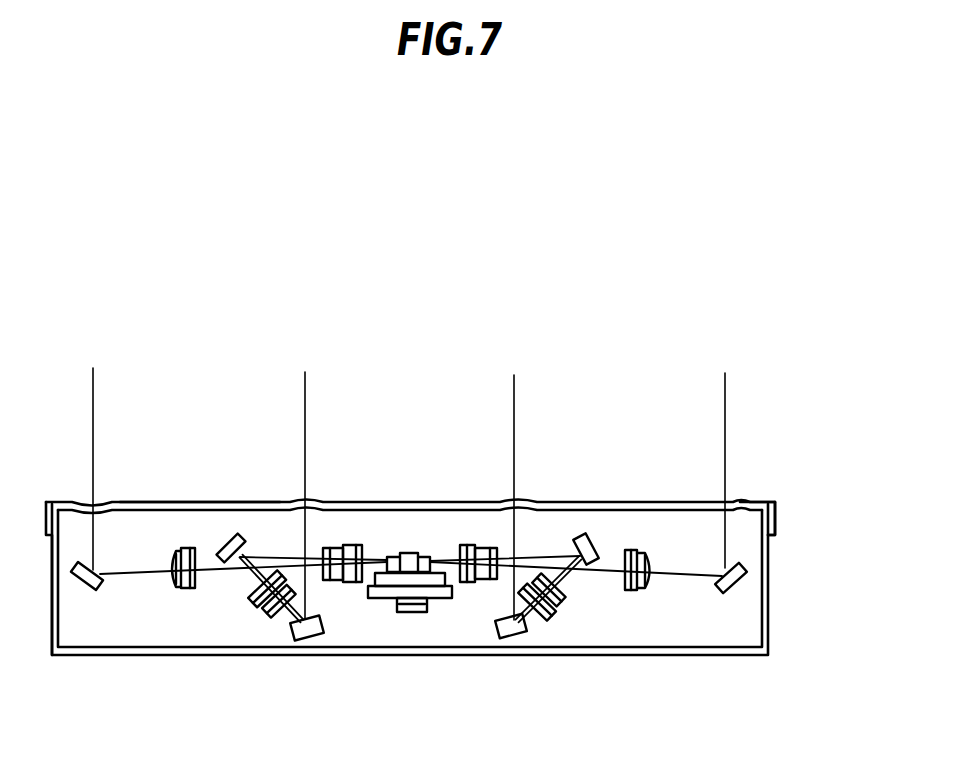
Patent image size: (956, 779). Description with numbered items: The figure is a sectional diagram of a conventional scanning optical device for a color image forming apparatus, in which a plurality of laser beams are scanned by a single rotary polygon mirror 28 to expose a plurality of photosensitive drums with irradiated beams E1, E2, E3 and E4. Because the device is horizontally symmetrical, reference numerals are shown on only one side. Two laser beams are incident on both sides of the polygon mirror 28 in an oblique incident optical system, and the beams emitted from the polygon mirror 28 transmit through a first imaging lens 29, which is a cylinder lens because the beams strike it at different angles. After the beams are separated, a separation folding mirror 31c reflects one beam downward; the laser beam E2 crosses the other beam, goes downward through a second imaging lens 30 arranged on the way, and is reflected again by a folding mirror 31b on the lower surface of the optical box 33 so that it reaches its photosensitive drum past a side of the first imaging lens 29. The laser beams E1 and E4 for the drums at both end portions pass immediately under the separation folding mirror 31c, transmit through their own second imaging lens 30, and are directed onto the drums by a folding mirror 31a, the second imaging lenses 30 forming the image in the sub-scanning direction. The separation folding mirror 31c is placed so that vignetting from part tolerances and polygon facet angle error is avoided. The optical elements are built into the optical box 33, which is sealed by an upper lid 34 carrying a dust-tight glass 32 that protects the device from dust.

The polygon mirror 28 is at (447, 592).
The first imaging lens 29 is at (470, 543).
The second imaging lens 30 is at (556, 610).
The folding mirror 31a is at (739, 592).
The folding mirror 31b is at (513, 637).
The separation folding mirror 31c is at (589, 536).
The dust-tight glass 32 is at (737, 503).
The optical box 33 is at (226, 656).
The upper lid 34 is at (200, 502).
The laser beam E1 is at (710, 440).
The laser beam E2 is at (515, 466).
The laser beam E3 is at (309, 465).
The laser beam E4 is at (97, 441).